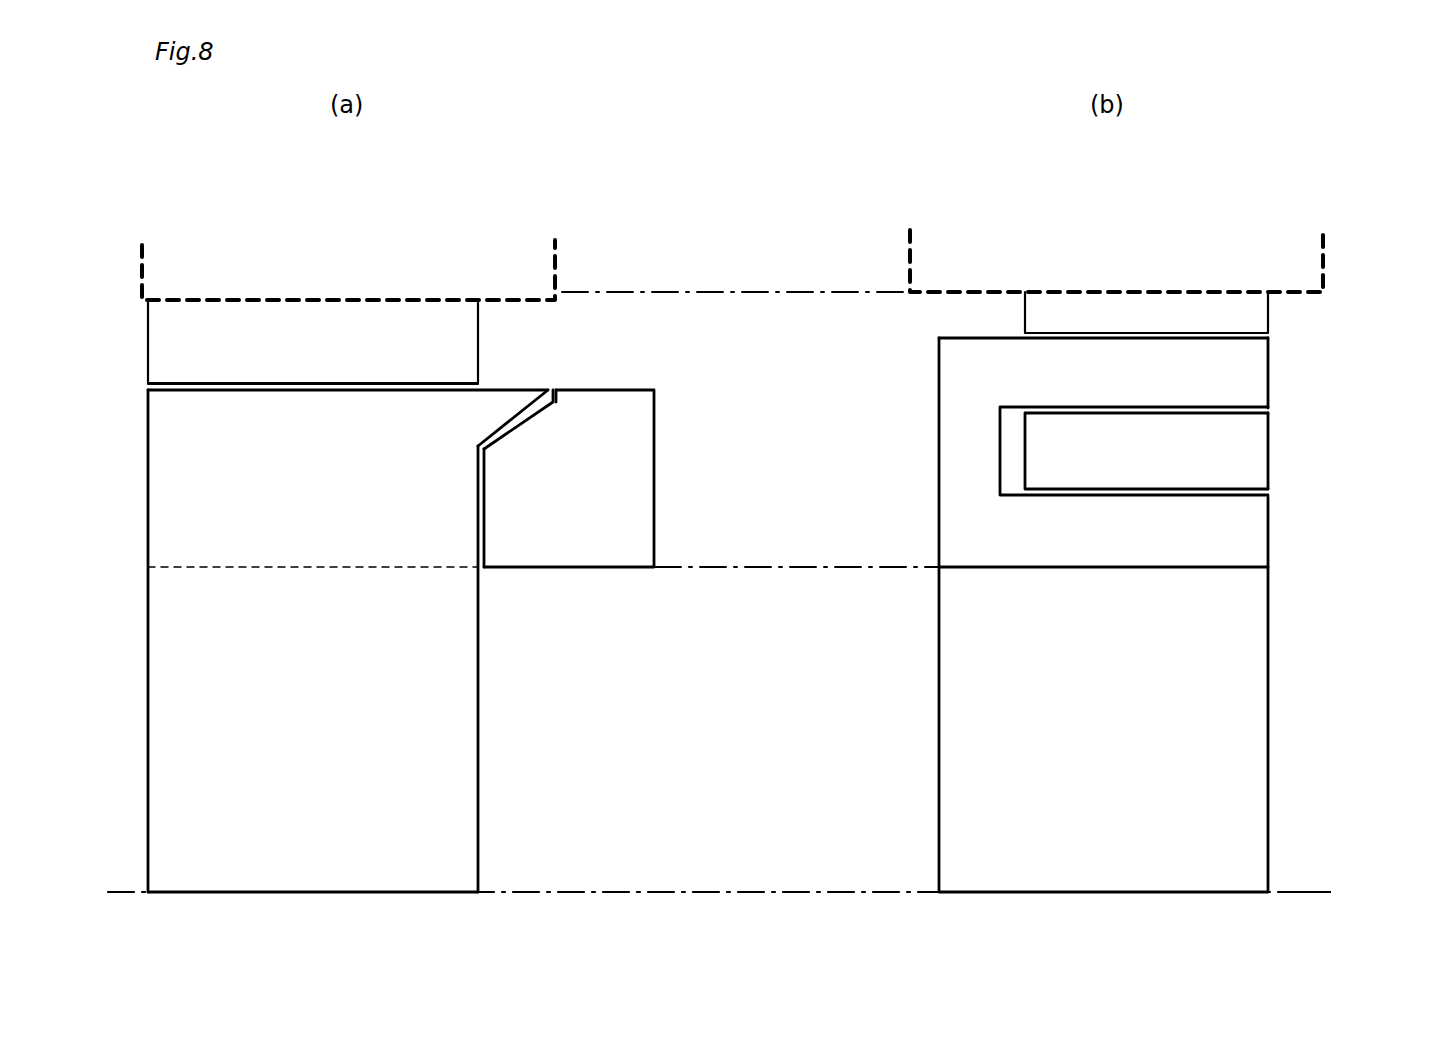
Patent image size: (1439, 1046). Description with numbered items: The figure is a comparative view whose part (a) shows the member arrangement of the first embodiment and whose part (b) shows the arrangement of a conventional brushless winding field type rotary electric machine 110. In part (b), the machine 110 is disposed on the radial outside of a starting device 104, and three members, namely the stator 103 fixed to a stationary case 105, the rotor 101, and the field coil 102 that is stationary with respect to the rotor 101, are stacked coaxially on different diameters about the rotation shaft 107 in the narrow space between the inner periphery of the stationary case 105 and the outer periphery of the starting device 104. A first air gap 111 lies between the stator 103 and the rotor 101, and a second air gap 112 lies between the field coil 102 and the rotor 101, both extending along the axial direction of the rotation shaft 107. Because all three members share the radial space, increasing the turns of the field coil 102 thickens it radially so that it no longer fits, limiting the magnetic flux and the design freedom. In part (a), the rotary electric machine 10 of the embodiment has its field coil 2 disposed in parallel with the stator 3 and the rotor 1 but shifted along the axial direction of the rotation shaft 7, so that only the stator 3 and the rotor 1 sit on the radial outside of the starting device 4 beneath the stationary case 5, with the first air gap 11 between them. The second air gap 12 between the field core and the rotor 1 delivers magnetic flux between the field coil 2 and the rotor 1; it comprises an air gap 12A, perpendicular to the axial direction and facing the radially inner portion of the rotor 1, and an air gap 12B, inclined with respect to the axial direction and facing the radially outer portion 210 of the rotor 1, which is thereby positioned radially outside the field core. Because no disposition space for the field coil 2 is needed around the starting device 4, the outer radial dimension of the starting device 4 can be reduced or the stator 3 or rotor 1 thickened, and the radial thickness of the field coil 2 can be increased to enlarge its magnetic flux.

The rotor 1 is at (391, 556).
The field coil 2 is at (643, 438).
The stator 3 is at (236, 327).
The starting device 4 is at (173, 786).
The mounting region 5 is at (405, 257).
The rotation shaft 7 is at (691, 890).
The electronic device 10 is at (130, 366).
The bonding layer 11 is at (323, 383).
The second air gap 12 is at (591, 556).
The air gap 12A is at (483, 507).
The air gap 12B is at (517, 414).
The radially outer portion 210 is at (535, 397).
The rotor 101 is at (1255, 373).
The field coil 102 is at (1181, 484).
The stator 103 is at (1258, 314).
The starting device 104 is at (1258, 695).
The stationary case 105 is at (1215, 258).
The rotation shaft 107 is at (1322, 890).
The brushless winding field type rotary electric machine 110 is at (1327, 500).
The first air gap 111 is at (1127, 335).
The second air gap 112 is at (1097, 413).